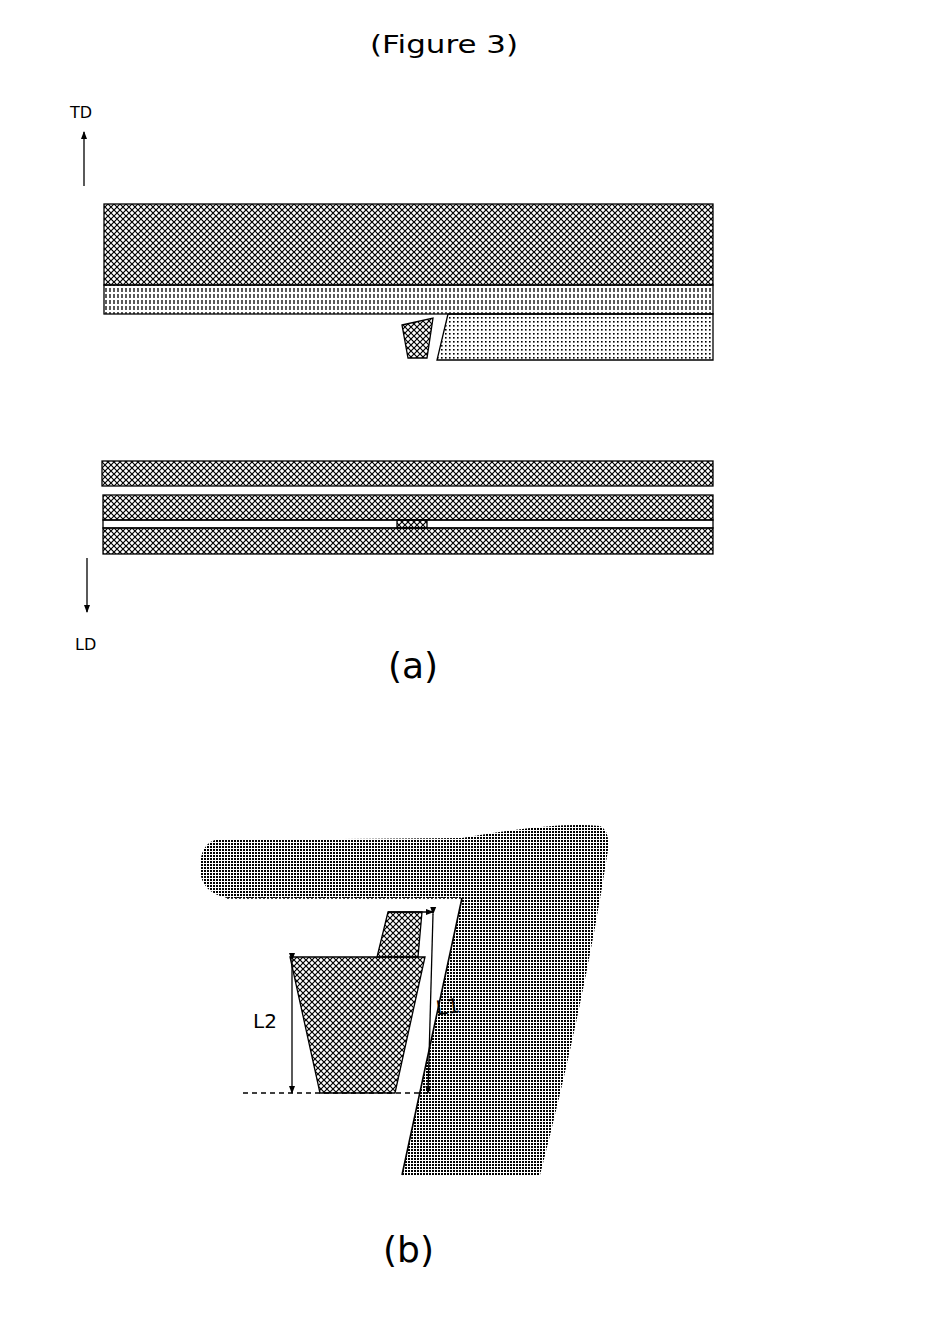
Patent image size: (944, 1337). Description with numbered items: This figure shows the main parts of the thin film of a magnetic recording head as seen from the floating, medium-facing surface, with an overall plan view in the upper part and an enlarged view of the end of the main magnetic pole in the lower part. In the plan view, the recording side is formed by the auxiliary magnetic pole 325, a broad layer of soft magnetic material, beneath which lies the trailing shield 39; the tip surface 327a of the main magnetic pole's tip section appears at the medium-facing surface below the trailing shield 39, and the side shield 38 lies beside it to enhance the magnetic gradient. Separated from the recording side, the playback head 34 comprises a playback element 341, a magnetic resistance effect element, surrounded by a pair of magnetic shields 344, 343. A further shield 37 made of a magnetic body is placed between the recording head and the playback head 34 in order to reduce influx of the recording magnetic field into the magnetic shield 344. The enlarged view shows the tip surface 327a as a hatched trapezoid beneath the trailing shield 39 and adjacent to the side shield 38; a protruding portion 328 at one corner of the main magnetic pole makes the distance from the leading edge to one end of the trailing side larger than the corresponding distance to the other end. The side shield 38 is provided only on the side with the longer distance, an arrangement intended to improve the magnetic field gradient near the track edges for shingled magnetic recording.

The auxiliary magnetic pole 325 is at (633, 228).
The trailing shield 39 is at (662, 305).
The side shield 38 is at (713, 337).
The tip surface 327a is at (427, 360).
The protruding portion 328 is at (399, 934).
The shield 37 is at (713, 465).
The playback head 34 is at (803, 500).
The magnetic shield 344 is at (713, 500).
The playback element 341 is at (410, 525).
The magnetic shield 343 is at (713, 535).